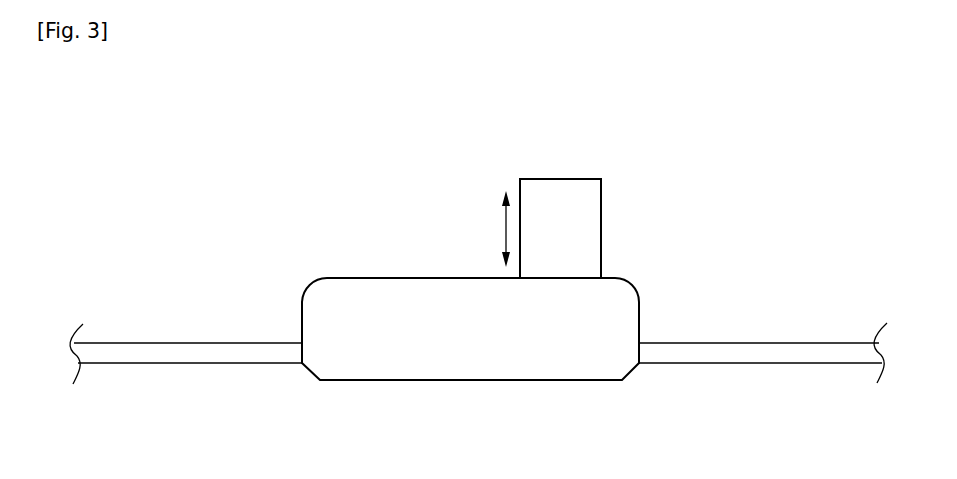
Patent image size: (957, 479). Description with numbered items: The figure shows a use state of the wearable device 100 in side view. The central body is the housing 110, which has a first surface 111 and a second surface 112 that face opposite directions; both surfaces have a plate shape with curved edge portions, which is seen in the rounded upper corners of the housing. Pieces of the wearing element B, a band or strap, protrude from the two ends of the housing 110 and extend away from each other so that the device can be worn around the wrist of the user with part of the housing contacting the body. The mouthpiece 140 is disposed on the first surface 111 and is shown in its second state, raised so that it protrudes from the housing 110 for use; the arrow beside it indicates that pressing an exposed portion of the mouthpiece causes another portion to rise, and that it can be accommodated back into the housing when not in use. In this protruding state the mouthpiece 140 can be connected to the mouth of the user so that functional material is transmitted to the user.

The wearable device 100 is at (488, 128).
The housing 110 is at (324, 272).
The first surface 111 is at (447, 277).
The second surface 112 is at (472, 381).
The mouthpiece 140 is at (601, 228).
The wearing element B is at (197, 353).